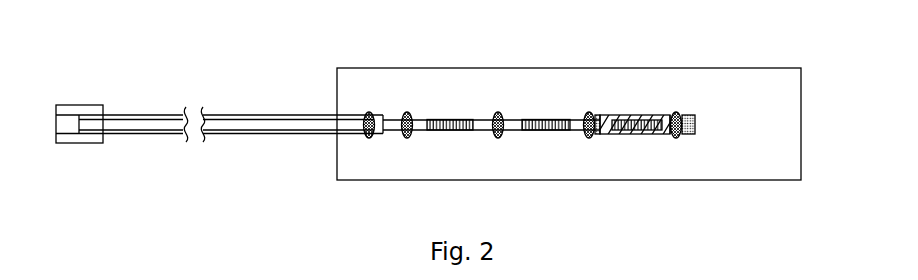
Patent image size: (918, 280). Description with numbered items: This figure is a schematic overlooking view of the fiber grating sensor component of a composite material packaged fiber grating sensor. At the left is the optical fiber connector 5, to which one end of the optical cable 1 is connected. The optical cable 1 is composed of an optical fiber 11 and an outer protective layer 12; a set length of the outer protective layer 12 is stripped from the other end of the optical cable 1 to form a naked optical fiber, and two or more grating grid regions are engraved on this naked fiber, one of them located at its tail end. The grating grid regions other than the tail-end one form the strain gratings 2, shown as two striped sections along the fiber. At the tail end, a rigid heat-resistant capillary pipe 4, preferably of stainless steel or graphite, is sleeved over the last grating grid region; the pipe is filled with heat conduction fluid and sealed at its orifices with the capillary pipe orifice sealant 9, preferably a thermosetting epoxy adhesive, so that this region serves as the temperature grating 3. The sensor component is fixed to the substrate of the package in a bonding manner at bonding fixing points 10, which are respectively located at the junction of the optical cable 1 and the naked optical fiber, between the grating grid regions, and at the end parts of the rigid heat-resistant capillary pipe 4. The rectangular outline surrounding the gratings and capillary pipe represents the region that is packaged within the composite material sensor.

The optical cable 1 is at (237, 105).
The strain grating 2 is at (443, 113).
The temperature grating 3 is at (628, 113).
The rigid heat-resistant capillary pipe 4 is at (664, 110).
The optical fiber connector 5 is at (80, 102).
The capillary pipe orifice sealant 9 is at (597, 113).
The bonding fixing point 10 is at (369, 144).
The optical fiber 11 is at (277, 121).
The outer protective layer 12 is at (308, 113).